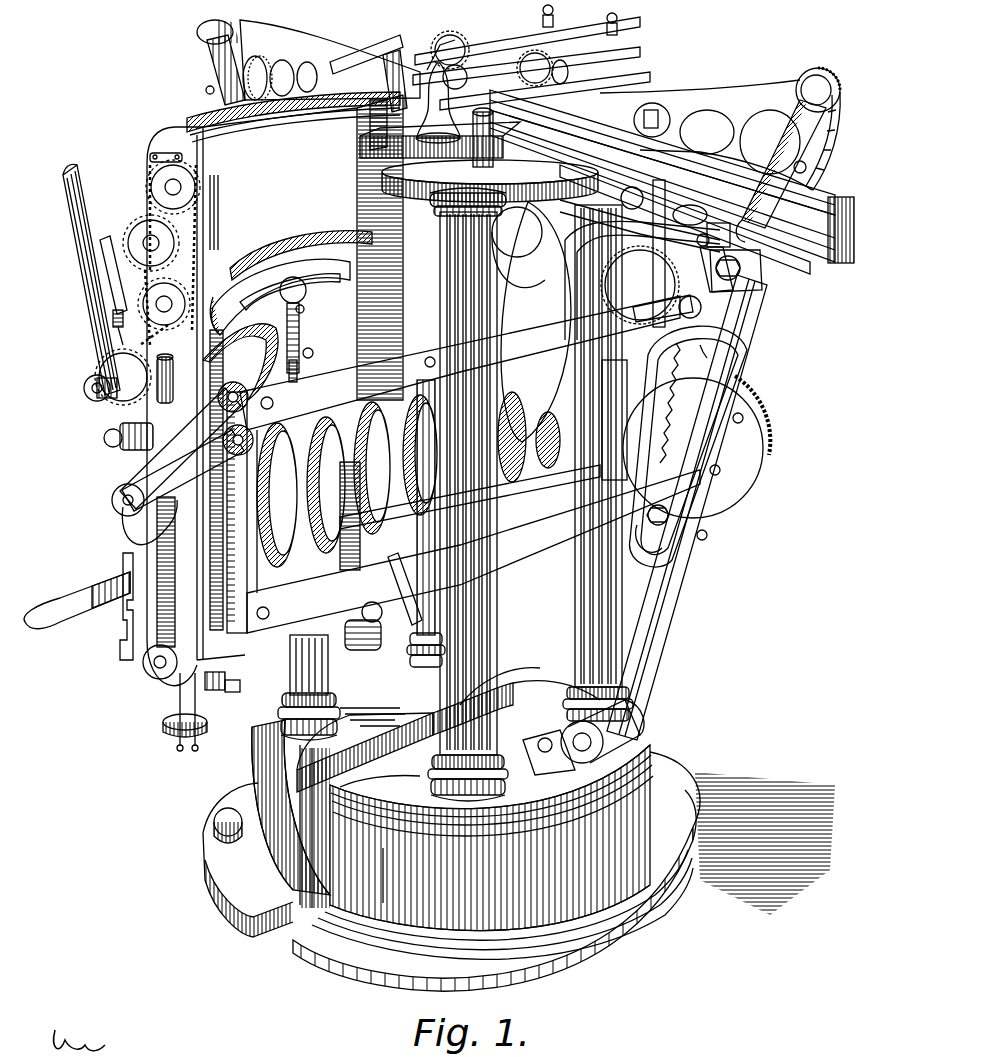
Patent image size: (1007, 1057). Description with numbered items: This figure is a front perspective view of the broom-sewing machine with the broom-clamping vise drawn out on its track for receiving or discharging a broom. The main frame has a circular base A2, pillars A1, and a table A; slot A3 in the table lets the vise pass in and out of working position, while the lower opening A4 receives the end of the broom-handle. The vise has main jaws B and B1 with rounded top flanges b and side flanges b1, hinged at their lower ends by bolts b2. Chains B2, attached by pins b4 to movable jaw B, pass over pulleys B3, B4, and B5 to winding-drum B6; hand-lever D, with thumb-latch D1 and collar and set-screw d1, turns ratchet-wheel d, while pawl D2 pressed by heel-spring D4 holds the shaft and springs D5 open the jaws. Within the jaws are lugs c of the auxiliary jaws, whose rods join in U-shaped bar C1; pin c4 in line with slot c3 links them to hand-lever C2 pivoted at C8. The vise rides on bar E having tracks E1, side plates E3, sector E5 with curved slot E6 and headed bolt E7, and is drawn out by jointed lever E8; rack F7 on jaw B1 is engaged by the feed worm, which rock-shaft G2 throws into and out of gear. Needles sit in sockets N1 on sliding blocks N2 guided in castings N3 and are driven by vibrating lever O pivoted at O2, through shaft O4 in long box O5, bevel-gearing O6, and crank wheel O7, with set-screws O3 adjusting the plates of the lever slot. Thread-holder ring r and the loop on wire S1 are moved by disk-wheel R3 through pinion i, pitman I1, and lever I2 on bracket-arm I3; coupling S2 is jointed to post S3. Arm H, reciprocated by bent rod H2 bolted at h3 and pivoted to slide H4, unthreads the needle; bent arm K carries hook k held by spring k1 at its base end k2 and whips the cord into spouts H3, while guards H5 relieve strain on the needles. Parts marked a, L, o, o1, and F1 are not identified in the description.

The bed or table A is at (530, 478).
The uprights or pillars A1 is at (421, 523).
The circular base A2 is at (519, 813).
The slot or opening in table A3 is at (479, 162).
The slot or opening in base A4 is at (510, 692).
The main jaw B is at (150, 178).
The main jaw B1 is at (300, 377).
The chains or cords B2 is at (192, 180).
The loose pulleys B3 is at (173, 187).
The pulleys B4 is at (151, 243).
The pulleys B5 is at (164, 304).
The winding-drum B6 is at (102, 392).
The rack a is at (293, 112).
The top flanges b is at (198, 120).
The side flanges b1 is at (210, 330).
The bolts b2 is at (155, 675).
The pins b4 is at (150, 155).
The hand-lever D is at (88, 230).
The thumb-latch D1 is at (113, 290).
The pawl D2 is at (109, 451).
The heel-spring D4 is at (135, 444).
The springs D5 is at (157, 563).
The ratchet-wheel d is at (125, 405).
The collar and set-screw d1 is at (94, 380).
The metallic bar E is at (347, 481).
The tracks E1 is at (470, 447).
The side plates E3 is at (463, 464).
The sector E5 is at (240, 348).
The curved slot E6 is at (281, 297).
The headed bolt E7 is at (293, 290).
The jointed hand-lever E8 is at (182, 449).
The lugs c is at (284, 342).
The slot c3 is at (310, 310).
The pin c4 is at (317, 347).
The U-shaped bar C1 is at (205, 704).
The hand-lever C2 is at (77, 603).
The pivot C8 is at (123, 595).
The wheel F1 is at (640, 285).
The rack or sector F7 is at (301, 249).
The rock-shaft G2 is at (518, 251).
The reciprocating arm H is at (642, 277).
The bent rod H2 is at (708, 257).
The spouts or guards H3 is at (534, 342).
The slide H4 is at (640, 226).
The guards H5 is at (430, 133).
The bolt connection h3 is at (750, 270).
The extensible pitman I1 is at (662, 253).
The vibrating lever I2 is at (685, 219).
The bracket-arm I3 is at (667, 308).
The pinion i is at (498, 74).
The bent arm K is at (655, 403).
The bent hook k is at (226, 70).
The spring k1 is at (781, 171).
The base end of hook k2 is at (818, 168).
The bar L is at (368, 73).
The tubular sockets N1 is at (662, 152).
The sliding blocks N2 is at (672, 186).
The slotted frames or castings N3 is at (518, 105).
The vibrating lever O is at (690, 507).
The cylinder o is at (383, 601).
The guide plate o1 is at (614, 420).
The pivot O2 is at (632, 712).
The set-screws O3 is at (725, 477).
The short shaft O4 is at (668, 489).
The long box O5 is at (695, 381).
The bevel-gearing O6 is at (765, 415).
The disk or crank wheel O7 is at (693, 448).
The oscillating disk-wheel R3 is at (450, 55).
The ring r is at (528, 65).
The wire S1 is at (527, 41).
The perforated standard S2 is at (526, 50).
The post S3 is at (545, 55).